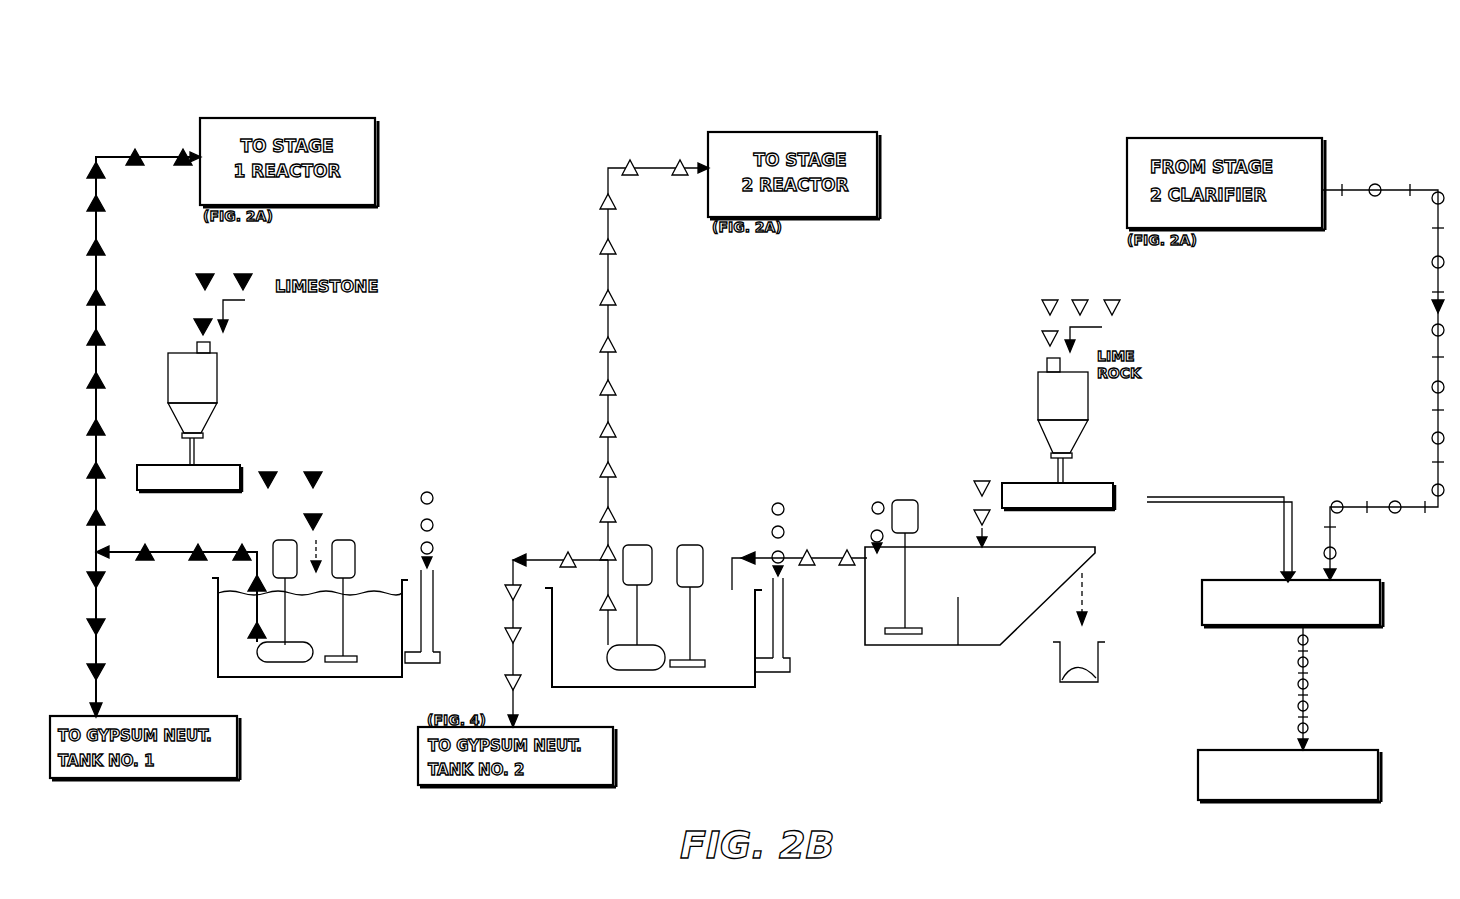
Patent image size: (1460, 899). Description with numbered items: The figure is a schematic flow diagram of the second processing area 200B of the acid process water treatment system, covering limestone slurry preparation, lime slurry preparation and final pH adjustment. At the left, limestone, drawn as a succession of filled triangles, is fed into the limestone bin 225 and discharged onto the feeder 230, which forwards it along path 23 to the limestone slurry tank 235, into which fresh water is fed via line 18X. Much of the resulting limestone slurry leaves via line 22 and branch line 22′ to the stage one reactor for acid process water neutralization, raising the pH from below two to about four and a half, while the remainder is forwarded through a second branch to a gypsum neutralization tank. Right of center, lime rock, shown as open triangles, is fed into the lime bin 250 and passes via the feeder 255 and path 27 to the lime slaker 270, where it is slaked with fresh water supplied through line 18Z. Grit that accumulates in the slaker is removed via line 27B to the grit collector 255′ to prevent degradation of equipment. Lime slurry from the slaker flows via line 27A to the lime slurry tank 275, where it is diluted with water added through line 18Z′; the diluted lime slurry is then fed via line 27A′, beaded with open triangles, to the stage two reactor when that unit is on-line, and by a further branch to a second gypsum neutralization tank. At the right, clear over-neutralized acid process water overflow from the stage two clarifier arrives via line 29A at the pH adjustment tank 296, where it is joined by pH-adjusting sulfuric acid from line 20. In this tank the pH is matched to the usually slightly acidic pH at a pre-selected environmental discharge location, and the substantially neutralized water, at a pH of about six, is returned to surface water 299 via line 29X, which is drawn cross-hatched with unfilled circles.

The line 22 is at (175, 556).
The branch line 22′ is at (96, 485).
The limestone bin 225 is at (217, 400).
The feeder 230 is at (241, 478).
The path 23 is at (313, 499).
The line 18X is at (421, 528).
The limestone slurry tank 235 is at (218, 668).
The line 27A′ is at (608, 497).
The line 27A is at (815, 563).
The lime slurry tank 275 is at (755, 683).
The line 18Z′ is at (786, 529).
The line 18Z is at (873, 503).
The path 27 is at (983, 484).
The line 27B is at (1085, 588).
The lime bin 250 is at (1088, 395).
The feeder 255 is at (1085, 508).
The grit collector 255′ is at (1100, 672).
The lime slaker 270 is at (1003, 647).
The line 20 is at (1308, 486).
The line 29A is at (1331, 572).
The pH adjustment tank 296 is at (1383, 608).
The line 29X is at (1310, 726).
The surface water 299 is at (1381, 782).
The second processing area 200B is at (900, 342).